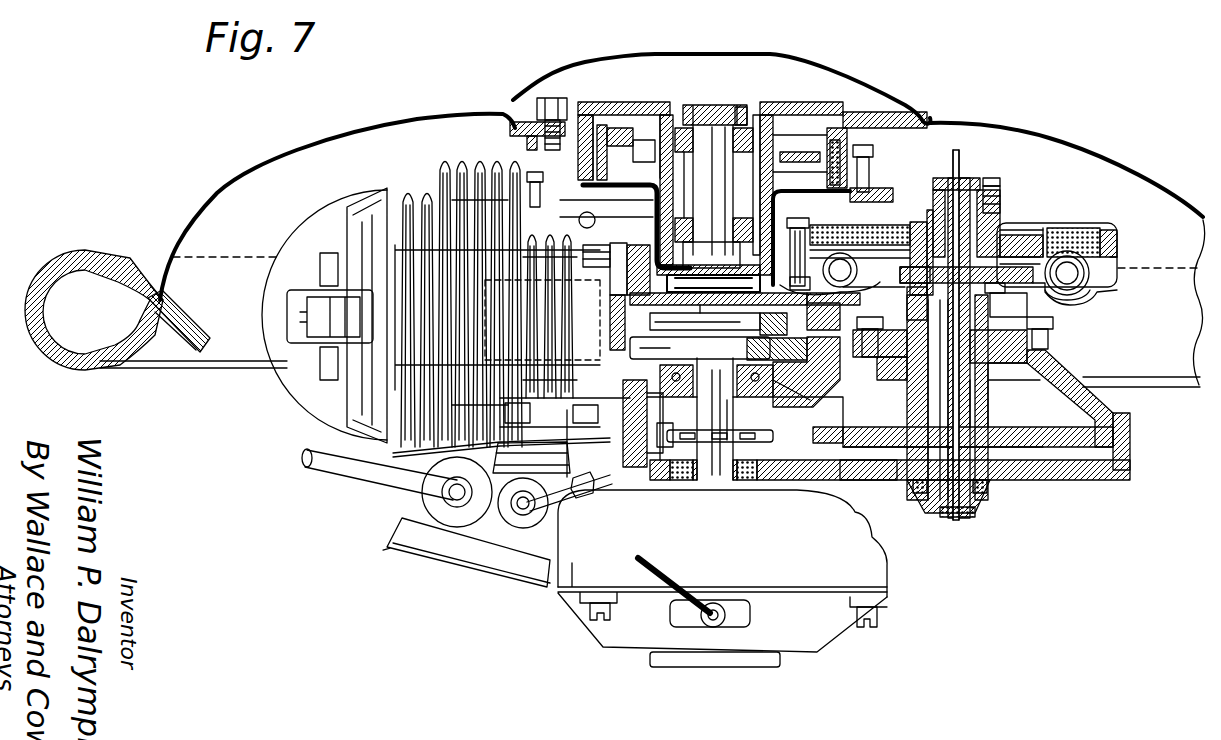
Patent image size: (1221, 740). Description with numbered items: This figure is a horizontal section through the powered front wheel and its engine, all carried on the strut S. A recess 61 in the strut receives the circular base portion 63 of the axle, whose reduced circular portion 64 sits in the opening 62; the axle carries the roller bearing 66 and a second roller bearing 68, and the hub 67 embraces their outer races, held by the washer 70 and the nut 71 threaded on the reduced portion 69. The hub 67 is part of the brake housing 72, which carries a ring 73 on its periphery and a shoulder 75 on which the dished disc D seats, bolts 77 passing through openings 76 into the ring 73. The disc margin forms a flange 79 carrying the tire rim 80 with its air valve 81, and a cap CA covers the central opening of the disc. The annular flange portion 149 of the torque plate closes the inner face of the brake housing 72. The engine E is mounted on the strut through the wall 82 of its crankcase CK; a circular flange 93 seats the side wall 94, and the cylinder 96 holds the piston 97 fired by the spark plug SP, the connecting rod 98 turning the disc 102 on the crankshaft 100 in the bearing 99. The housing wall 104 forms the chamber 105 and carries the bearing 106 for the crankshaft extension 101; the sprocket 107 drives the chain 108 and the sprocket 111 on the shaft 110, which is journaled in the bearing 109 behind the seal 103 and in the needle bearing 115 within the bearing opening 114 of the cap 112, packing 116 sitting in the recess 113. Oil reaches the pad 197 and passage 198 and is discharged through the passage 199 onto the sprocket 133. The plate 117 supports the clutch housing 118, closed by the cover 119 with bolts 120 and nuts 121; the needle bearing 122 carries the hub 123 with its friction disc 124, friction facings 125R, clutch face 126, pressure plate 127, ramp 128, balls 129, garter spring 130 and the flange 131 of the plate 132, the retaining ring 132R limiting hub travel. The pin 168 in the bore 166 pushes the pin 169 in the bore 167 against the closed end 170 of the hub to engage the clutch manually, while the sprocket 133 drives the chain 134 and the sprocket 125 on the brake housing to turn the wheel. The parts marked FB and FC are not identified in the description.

The dished disc D is at (250, 170).
The cap CA is at (690, 54).
The tire rim 80 is at (137, 277).
The flange 79 is at (168, 298).
The air valve 81 is at (193, 335).
The engine E is at (330, 425).
The spark plug SP is at (305, 340).
The piston 97 is at (568, 308).
The openings 76 is at (548, 98).
The bolts 77 is at (560, 115).
The ring 73 is at (515, 135).
The shoulder 75 is at (600, 100).
The brake housing 72 is at (620, 100).
The annular flange portion 149 is at (612, 190).
The washer 70 is at (682, 127).
The nut 71 is at (710, 105).
The reduced portion 69 is at (735, 102).
The hub 67 is at (690, 195).
The roller bearing 66 is at (690, 232).
The reduced circular portion 64 is at (700, 255).
The opening 62 is at (712, 282).
The roller bearing 68 is at (770, 115).
The frame block FB is at (800, 147).
The sprocket 125 is at (878, 190).
The cylinder 96 is at (588, 255).
The strut S is at (615, 255).
The recess 61 is at (660, 302).
The circular flange 93 is at (823, 313).
The connecting rod 98 is at (672, 300).
The circular base portion 63 is at (701, 313).
The wall 82 is at (745, 303).
The disc 102 is at (718, 348).
The nuts 121 is at (811, 288).
The crankshaft extension 101 is at (707, 475).
The crankshaft 100 is at (733, 420).
The bearing 99 is at (777, 362).
The side wall 94 is at (800, 362).
The sprocket 107 is at (770, 432).
The sprocket 111 is at (823, 443).
The chamber 105 is at (848, 424).
The crankcase CK is at (943, 429).
The chain 108 is at (663, 483).
The bearing 106 is at (760, 487).
The housing wall 104 is at (847, 470).
The clutch housing FC is at (820, 220).
The bolts 120 is at (798, 232).
The plate 132 is at (873, 230).
The axial bore 167 is at (920, 223).
The pin 169 is at (935, 212).
The plate 117 is at (900, 287).
The pad 197 is at (883, 370).
The passage 198 is at (893, 380).
The closed end 170 is at (950, 178).
The pin 168 is at (953, 517).
The axial bore 166 is at (957, 413).
The sprocket 133 is at (933, 190).
The hub 123 is at (970, 175).
The passage 199 is at (983, 178).
The chain 134 is at (1000, 180).
The needle bearing 122 is at (983, 233).
The bearing opening 114 is at (1007, 377).
The needle bearing 115 is at (1020, 360).
The shaft 110 is at (988, 403).
The bearing 109 is at (1007, 493).
The seal 103 is at (970, 517).
The recess 113 is at (990, 290).
The packing 116 is at (997, 310).
The cap 112 is at (1053, 328).
The cover 119 is at (1010, 223).
The friction disc 124 is at (1050, 237).
The retaining ring 132R is at (1047, 233).
The clutch face 126 is at (1080, 237).
The friction facings 125R is at (1113, 233).
The pressure plate 127 is at (1117, 257).
The clutch housing 118 is at (1117, 267).
The flange 131 is at (1078, 267).
The garter spring 130 is at (1110, 280).
The balls 129 is at (1087, 283).
The ramp 128 is at (1080, 290).